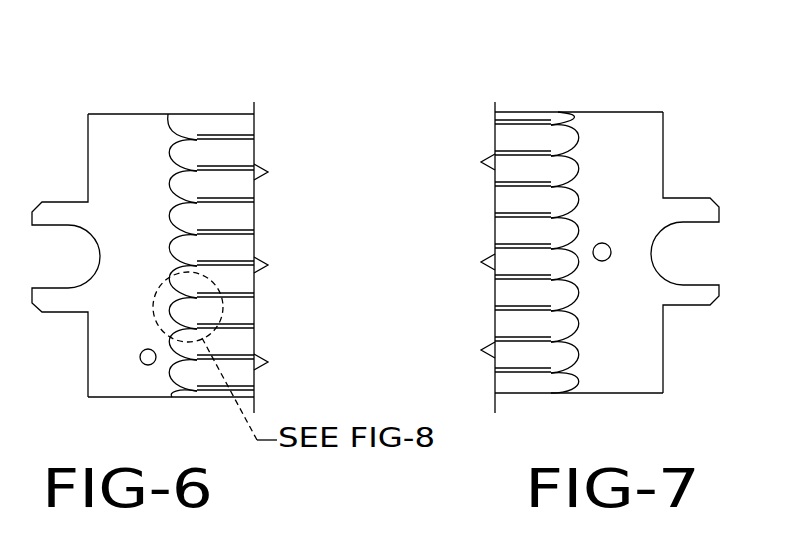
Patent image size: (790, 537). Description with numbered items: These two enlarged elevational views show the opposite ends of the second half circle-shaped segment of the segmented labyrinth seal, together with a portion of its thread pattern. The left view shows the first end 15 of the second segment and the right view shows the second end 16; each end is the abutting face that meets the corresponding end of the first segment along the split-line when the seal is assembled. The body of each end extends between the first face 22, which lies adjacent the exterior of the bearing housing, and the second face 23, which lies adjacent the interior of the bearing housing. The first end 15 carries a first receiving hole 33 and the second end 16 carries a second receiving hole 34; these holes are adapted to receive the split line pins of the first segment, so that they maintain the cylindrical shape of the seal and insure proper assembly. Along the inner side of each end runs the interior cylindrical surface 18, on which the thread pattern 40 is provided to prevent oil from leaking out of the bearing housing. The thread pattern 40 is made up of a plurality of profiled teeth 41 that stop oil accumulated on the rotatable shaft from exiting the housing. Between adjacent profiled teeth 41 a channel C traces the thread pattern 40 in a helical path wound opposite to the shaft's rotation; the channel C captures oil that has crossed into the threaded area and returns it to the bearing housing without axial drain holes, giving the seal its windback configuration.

In FIG. 6, the first end 15 is at (135, 207).
In FIG. 7, the second end 16 is at (617, 200).
In FIG. 6, the interior cylindrical surface 18 is at (172, 177).
In FIG. 7, the interior cylindrical surface 18 is at (587, 157).
In FIG. 6, the first face 22 is at (127, 113).
In FIG. 7, the first face 22 is at (622, 112).
In FIG. 6, the second face 23 is at (130, 397).
In FIG. 7, the second face 23 is at (627, 393).
In FIG. 6, the first receiving hole 33 is at (140, 356).
In FIG. 7, the second receiving hole 34 is at (603, 261).
In FIG. 6, the thread pattern 40 is at (215, 112).
In FIG. 7, the thread pattern 40 is at (528, 110).
In FIG. 6, the profiled teeth 41 is at (205, 226).
In FIG. 7, the profiled teeth 41 is at (548, 368).
In FIG. 6, the channel C is at (176, 142).
In FIG. 7, the channel C is at (578, 280).